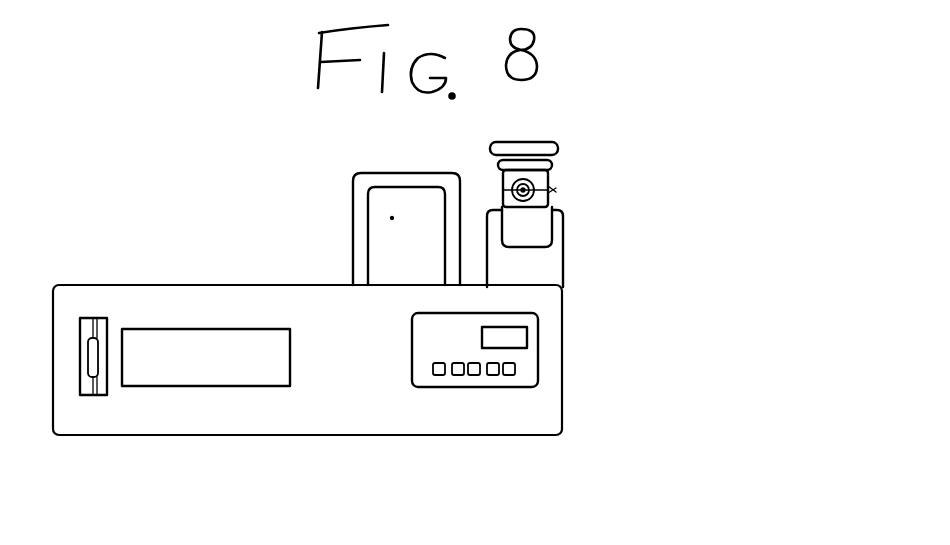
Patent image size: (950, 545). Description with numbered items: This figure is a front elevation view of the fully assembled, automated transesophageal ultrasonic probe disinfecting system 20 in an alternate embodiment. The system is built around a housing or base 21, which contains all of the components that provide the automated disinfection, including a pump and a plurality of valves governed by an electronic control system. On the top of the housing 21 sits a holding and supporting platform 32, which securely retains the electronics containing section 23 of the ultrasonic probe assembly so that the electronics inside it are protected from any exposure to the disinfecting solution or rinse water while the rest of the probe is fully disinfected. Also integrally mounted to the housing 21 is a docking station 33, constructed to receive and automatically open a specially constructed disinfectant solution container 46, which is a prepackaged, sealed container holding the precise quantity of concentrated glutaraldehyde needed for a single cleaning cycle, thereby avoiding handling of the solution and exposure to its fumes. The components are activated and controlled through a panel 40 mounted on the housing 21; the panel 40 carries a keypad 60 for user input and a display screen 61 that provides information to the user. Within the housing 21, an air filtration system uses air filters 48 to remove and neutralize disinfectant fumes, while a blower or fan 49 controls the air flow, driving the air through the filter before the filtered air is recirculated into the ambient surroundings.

The transesophageal ultrasonic probe disinfecting system 20 is at (252, 100).
The housing 21 is at (131, 423).
The electronics containing section 23 is at (558, 150).
The holding and supporting platform 32 is at (548, 255).
The docking station 33 is at (427, 173).
The panel 40 is at (412, 355).
The disinfectant solution container 46 is at (392, 218).
The air filters 48 is at (225, 372).
The blower or fan 49 is at (98, 330).
The keypad 60 is at (485, 372).
The display screen 61 is at (527, 330).